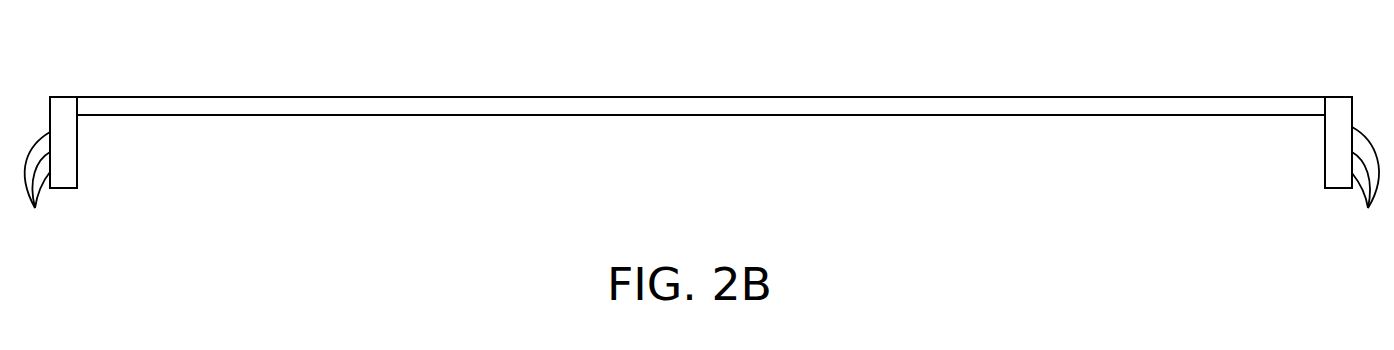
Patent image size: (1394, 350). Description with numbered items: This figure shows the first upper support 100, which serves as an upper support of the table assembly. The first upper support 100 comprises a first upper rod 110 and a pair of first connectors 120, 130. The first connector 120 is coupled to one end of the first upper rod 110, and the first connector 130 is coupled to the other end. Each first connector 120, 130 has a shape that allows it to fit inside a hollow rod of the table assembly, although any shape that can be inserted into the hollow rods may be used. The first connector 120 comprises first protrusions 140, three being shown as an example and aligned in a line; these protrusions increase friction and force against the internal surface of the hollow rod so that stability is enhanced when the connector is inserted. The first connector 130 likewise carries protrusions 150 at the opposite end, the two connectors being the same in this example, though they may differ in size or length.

The first upper support 100 is at (58, 38).
The first upper rod 110 is at (658, 108).
The first connector 120 is at (75, 162).
The first connector 130 is at (1328, 162).
The first protrusion 140 is at (35, 188).
The second curved light guiding portion 150 is at (1368, 186).